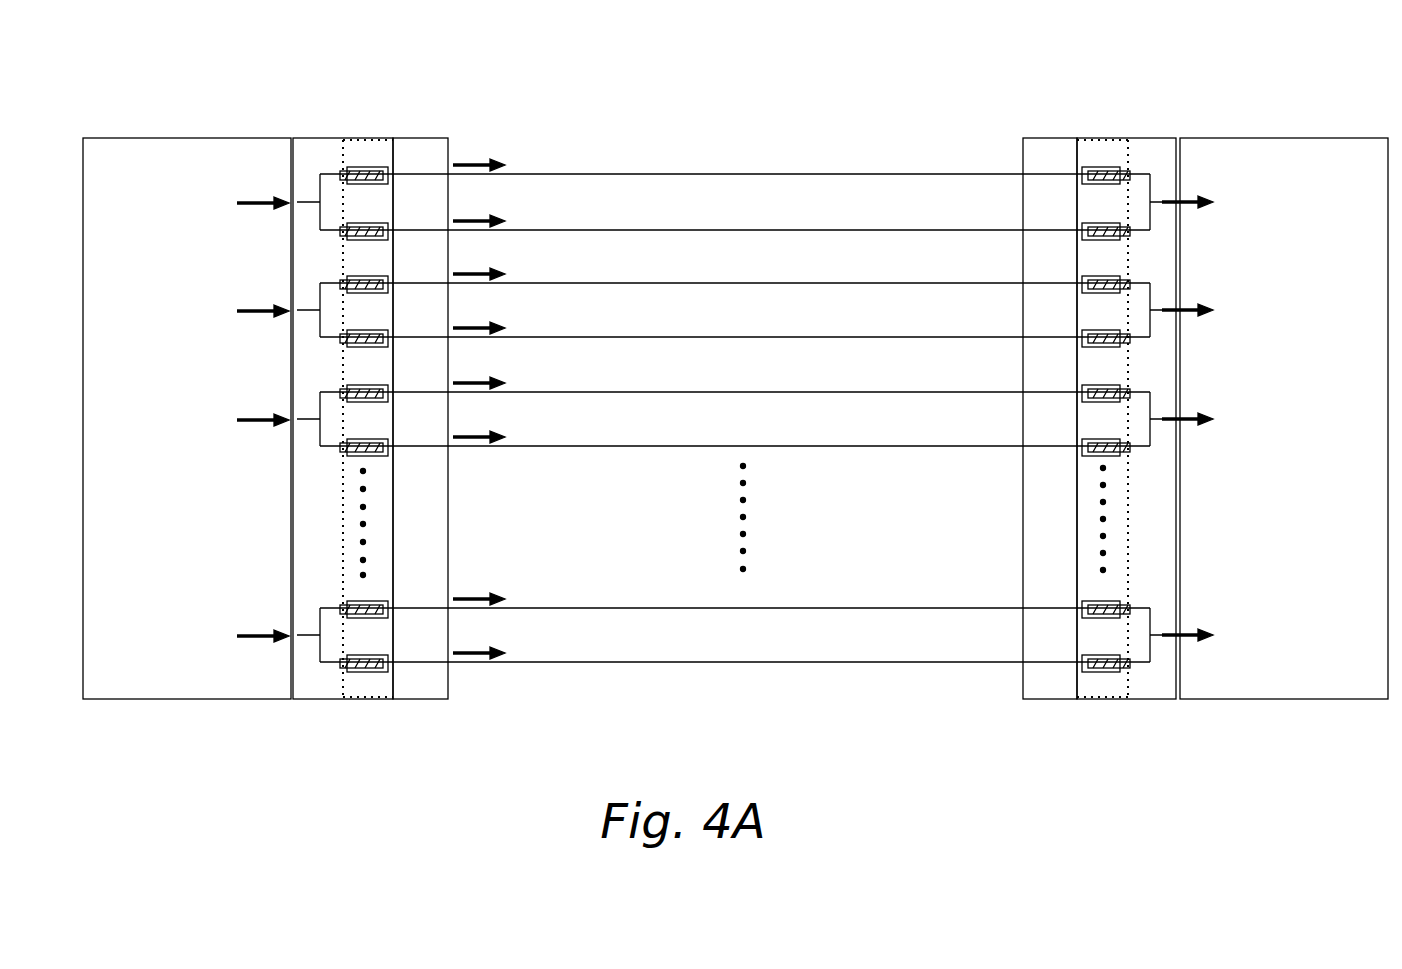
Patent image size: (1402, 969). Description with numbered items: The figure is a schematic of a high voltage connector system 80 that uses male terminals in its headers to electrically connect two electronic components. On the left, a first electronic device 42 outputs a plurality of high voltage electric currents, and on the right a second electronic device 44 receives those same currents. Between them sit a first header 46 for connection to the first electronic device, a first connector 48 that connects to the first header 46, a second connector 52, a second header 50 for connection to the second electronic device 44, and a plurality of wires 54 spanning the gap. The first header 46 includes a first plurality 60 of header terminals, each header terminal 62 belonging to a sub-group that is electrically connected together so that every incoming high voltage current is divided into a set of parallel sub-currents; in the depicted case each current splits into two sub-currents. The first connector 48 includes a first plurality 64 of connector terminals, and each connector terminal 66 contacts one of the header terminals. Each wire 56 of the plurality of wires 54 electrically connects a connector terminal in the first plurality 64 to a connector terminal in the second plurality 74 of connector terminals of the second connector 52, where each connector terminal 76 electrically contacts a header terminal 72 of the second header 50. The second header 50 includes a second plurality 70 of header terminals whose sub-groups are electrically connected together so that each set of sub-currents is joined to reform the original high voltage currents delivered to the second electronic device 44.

The first electronic device 42 is at (200, 148).
The second electronic device 44 is at (1293, 145).
The first header 46 is at (320, 140).
The first connector 48 is at (430, 140).
The second header 50 is at (1155, 145).
The second connector 52 is at (1065, 145).
The plurality of wires 54 is at (735, 438).
The wire 56 is at (720, 174).
The first plurality of header terminals 60 is at (349, 406).
The header terminal 62 is at (340, 172).
The first plurality of connector terminals 64 is at (380, 457).
The connector terminal 66 is at (388, 182).
The second plurality of header terminals 70 is at (1114, 403).
The header terminal 72 is at (1130, 172).
The second plurality of connector terminals 74 is at (1108, 461).
The connector terminal 76 is at (1083, 182).
The high voltage connector system 80 is at (826, 78).